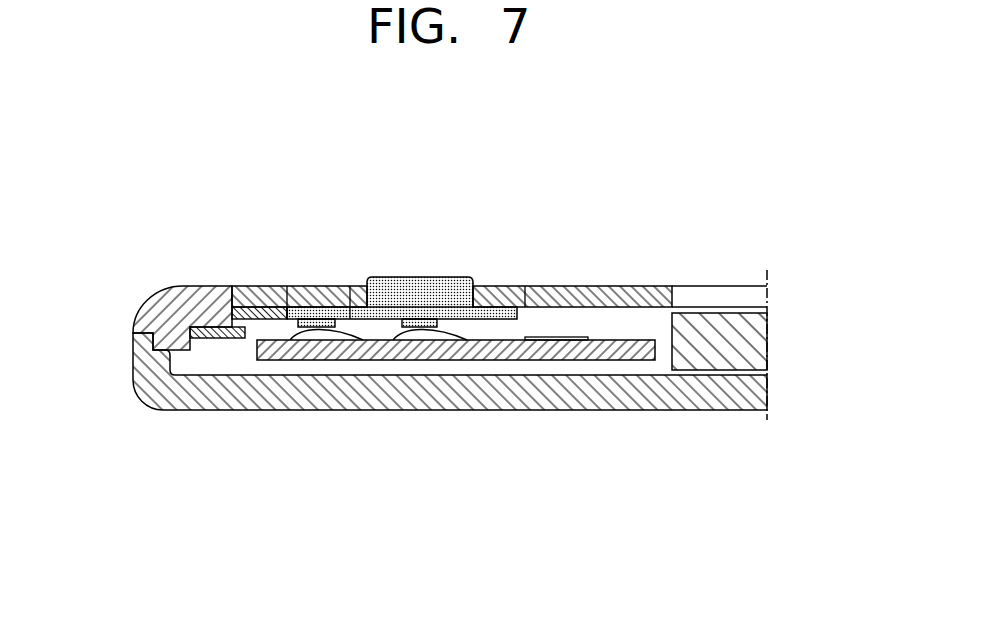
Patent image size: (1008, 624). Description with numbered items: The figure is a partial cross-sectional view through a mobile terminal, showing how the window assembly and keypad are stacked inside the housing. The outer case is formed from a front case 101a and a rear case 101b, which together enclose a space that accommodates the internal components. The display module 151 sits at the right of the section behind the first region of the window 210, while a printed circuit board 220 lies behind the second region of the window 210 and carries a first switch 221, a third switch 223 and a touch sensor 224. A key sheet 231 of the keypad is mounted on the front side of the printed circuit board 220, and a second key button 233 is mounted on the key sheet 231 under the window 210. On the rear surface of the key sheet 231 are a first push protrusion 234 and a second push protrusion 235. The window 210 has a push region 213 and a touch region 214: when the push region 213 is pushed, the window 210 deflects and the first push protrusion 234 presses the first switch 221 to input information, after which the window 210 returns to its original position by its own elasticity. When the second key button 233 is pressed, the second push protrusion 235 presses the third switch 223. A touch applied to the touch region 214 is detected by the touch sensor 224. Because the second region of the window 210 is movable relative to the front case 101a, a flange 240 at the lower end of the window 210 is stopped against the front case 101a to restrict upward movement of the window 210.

The front case 101a is at (137, 323).
The rear case 101b is at (135, 362).
The display module 151 is at (760, 342).
The window 210 is at (705, 270).
The push region 213 is at (320, 287).
The touch region 214 is at (558, 287).
The printed circuit board 220 is at (620, 357).
The first switch 221 is at (313, 335).
The third switch 223 is at (420, 335).
The touch sensor 224 is at (553, 340).
The key sheet 231 is at (498, 307).
The second key button 233 is at (422, 277).
The first push protrusion 234 is at (363, 340).
The second push protrusion 235 is at (465, 342).
The flange 240 is at (208, 338).